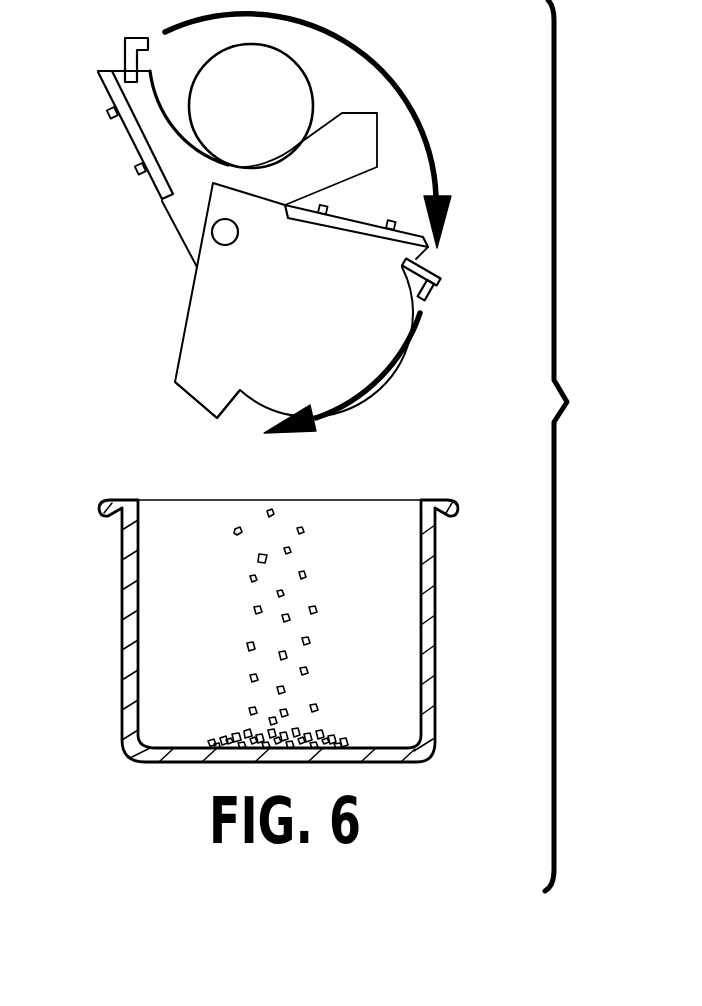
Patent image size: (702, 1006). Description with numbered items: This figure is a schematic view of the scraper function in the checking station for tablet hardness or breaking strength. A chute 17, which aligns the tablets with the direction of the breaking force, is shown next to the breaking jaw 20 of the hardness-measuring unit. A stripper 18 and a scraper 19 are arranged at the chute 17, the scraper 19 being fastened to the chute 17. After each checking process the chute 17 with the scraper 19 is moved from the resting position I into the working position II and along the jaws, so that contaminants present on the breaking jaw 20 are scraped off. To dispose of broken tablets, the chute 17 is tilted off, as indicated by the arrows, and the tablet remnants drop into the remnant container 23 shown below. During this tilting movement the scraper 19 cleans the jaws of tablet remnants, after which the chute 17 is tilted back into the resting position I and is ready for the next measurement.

The resting position I is at (357, 127).
The working position II is at (203, 383).
The chute 17 is at (183, 228).
The stripper 18 is at (125, 54).
The scraper 19 is at (133, 138).
The breaking jaw 20 is at (235, 113).
The remnant container 23 is at (430, 641).